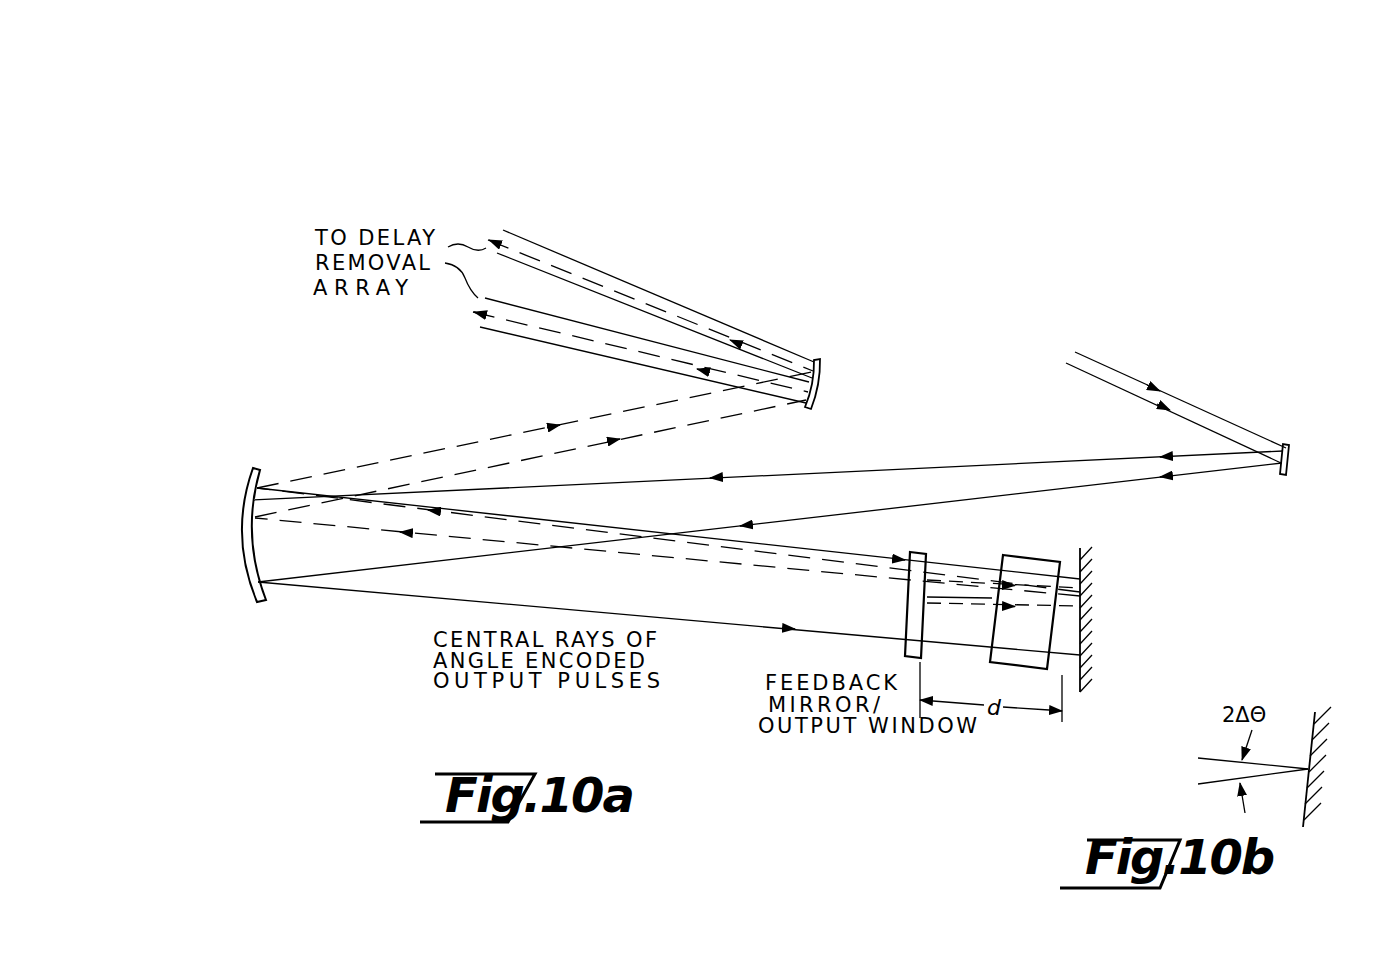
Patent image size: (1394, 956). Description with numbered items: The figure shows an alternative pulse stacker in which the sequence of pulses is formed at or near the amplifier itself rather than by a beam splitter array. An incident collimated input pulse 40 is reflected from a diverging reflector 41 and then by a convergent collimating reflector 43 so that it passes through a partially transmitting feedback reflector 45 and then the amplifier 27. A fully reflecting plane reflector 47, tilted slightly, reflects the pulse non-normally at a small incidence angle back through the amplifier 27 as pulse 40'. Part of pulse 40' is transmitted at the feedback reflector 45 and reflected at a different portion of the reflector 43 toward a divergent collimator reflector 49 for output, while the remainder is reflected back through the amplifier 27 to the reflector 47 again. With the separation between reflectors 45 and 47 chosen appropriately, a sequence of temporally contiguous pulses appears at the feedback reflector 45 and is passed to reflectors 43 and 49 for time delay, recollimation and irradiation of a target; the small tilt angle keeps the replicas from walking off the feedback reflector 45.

In FIG. 10A, the amplifier 27 is at (1025, 565).
In FIG. 10A, the input pulse 40 is at (1176, 394).
In FIG. 10A, the pulse 40' is at (1003, 561).
In FIG. 10A, the diverging reflector 41 is at (1288, 446).
In FIG. 10A, the convergent collimating reflector 43 is at (250, 470).
In FIG. 10A, the partially transmitting feedback reflector 45 is at (906, 647).
In FIG. 10A, the 100% reflecting plane reflector 47 is at (1083, 551).
In FIG. 10B, the 100% reflecting plane reflector 47 is at (1316, 712).
In FIG. 10A, the divergent collimator reflector 49 is at (821, 361).